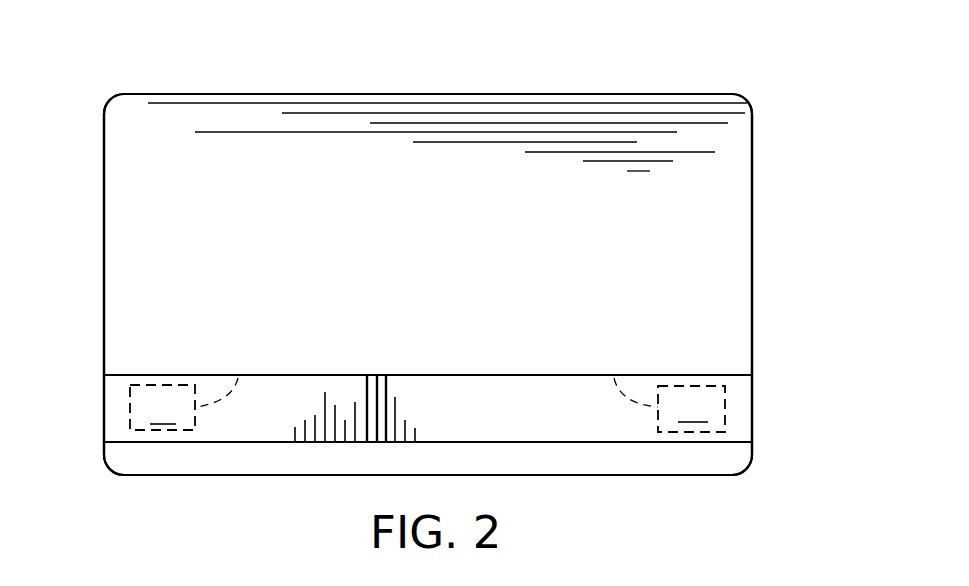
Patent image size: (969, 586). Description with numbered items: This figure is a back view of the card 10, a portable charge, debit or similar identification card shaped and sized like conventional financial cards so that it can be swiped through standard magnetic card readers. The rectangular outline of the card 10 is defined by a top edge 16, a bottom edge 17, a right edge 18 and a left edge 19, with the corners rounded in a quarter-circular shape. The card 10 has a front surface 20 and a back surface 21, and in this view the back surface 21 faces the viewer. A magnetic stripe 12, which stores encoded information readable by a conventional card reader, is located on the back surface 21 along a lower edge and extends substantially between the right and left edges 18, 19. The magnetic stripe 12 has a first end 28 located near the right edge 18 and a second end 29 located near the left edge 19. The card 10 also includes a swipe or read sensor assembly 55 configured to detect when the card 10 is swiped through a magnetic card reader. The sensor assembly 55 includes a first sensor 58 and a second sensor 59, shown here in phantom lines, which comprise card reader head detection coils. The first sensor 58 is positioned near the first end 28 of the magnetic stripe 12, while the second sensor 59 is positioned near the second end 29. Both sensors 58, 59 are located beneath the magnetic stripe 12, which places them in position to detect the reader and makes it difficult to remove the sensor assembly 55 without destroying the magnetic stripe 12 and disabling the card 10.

The card 10 is at (642, 44).
The magnetic stripe 12 is at (565, 412).
The top edge 16 is at (482, 94).
The bottom edge 17 is at (297, 478).
The right edge 18 is at (103, 216).
The left edge 19 is at (752, 300).
The front surface 20 is at (752, 133).
The back surface 21 is at (710, 206).
The first end of the magnetic stripe 28 is at (115, 407).
The second end of the magnetic stripe 29 is at (735, 411).
The swipe sensor assembly 55 is at (240, 374).
The first sensor 58 is at (163, 410).
The second sensor 59 is at (693, 407).